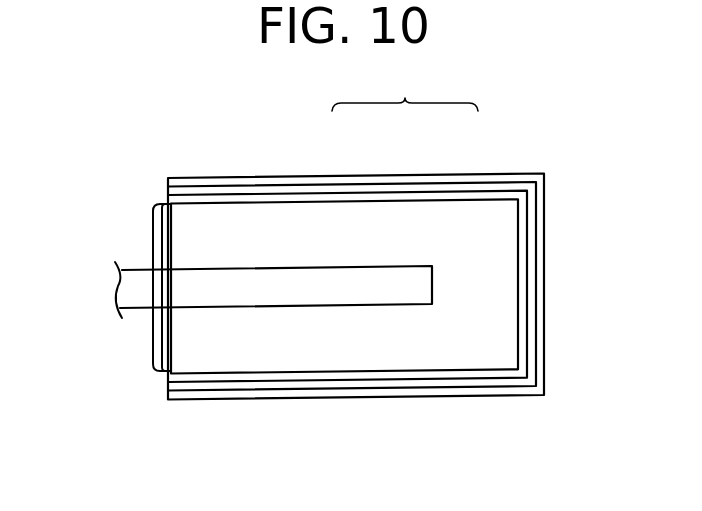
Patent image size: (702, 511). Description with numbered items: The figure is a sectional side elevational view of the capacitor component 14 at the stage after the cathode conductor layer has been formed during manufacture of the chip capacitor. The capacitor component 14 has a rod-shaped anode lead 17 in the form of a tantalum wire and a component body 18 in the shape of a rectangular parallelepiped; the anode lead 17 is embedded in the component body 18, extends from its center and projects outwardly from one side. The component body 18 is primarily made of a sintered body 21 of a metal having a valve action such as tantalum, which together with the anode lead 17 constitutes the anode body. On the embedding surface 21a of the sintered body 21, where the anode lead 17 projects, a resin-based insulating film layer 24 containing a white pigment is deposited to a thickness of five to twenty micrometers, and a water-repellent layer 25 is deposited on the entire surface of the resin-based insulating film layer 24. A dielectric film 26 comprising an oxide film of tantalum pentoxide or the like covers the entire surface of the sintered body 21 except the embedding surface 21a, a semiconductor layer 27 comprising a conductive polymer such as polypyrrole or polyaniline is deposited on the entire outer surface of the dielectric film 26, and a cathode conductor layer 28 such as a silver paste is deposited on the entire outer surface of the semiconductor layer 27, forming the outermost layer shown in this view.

The capacitor component 14 is at (548, 398).
The anode lead 17 is at (252, 288).
The component body 18 is at (405, 87).
The sintered body 21 is at (353, 208).
The embedding surface 21a is at (168, 240).
The resin-based insulating film layer 24 is at (158, 335).
The water-repellent layer 25 is at (153, 362).
The dielectric film 26 is at (380, 193).
The semiconductor layer 27 is at (413, 183).
The cathode conductor layer 28 is at (448, 175).